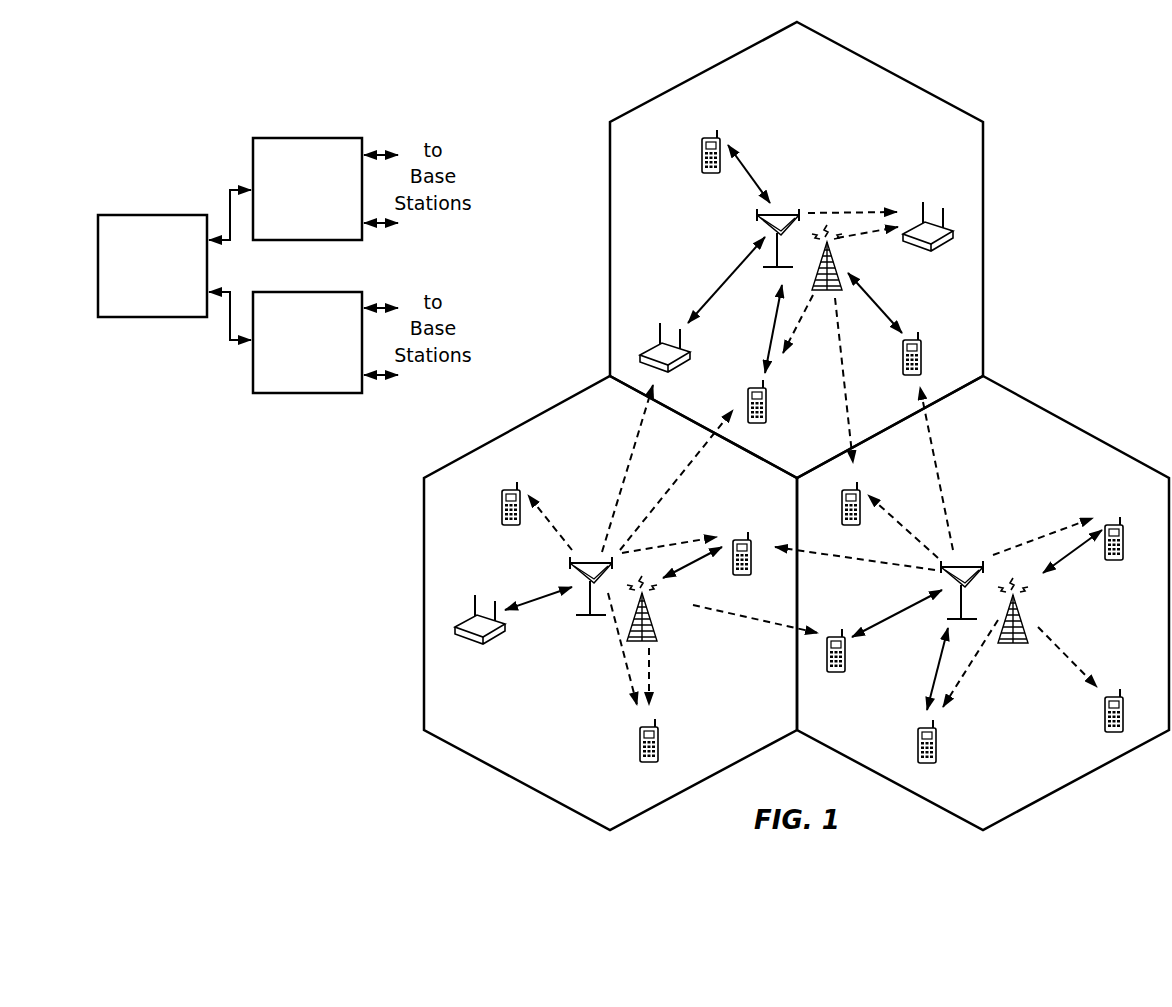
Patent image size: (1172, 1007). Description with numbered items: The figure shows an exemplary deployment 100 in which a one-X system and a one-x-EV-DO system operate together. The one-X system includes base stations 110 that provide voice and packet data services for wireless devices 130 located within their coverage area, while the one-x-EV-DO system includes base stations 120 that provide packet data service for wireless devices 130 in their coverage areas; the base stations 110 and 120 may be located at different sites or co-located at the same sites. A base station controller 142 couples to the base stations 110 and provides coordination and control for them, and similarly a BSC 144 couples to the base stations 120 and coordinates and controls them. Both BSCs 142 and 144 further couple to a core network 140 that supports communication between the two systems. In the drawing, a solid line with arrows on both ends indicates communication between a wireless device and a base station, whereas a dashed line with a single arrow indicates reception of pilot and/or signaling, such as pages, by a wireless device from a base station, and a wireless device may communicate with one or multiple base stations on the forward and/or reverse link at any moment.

The deployment 100 is at (1112, 83).
The base stations 110 is at (963, 567).
The base stations 120 is at (1036, 611).
The wireless devices 130 is at (702, 150).
The core network 140 is at (146, 215).
The base station controller 142 is at (298, 138).
The BSC 144 is at (298, 292).